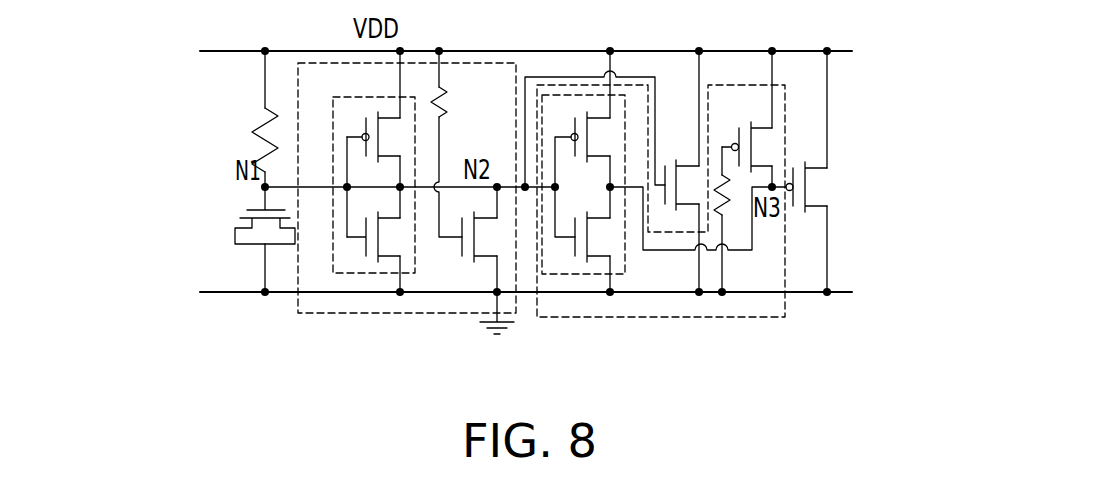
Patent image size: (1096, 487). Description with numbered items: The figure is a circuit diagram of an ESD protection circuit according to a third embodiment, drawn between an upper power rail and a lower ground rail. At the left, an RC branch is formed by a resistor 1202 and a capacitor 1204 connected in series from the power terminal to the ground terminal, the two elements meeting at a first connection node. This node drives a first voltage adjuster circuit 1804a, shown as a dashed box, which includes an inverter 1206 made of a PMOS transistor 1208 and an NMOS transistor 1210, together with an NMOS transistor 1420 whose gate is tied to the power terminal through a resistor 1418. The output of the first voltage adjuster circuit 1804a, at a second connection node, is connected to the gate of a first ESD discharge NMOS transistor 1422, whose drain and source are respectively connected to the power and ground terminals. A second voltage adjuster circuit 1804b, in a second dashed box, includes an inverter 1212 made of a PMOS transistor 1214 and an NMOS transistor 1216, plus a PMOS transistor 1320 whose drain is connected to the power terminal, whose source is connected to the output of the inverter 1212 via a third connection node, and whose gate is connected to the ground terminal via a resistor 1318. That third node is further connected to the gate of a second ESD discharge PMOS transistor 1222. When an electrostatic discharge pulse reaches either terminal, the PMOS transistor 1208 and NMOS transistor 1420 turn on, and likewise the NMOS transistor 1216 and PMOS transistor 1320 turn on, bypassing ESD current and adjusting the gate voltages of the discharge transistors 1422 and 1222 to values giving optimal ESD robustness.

The resistor 1202 is at (262, 136).
The capacitor 1204 is at (250, 207).
The inverter 1206 is at (332, 128).
The PMOS transistor 1208 is at (378, 118).
The NMOS transistor 1210 is at (368, 248).
The inverter 1212 is at (628, 272).
The PMOS transistor 1214 is at (577, 117).
The NMOS transistor 1216 is at (588, 253).
The second ESD discharge PMOS transistor 1222 is at (801, 204).
The resistor 1318 is at (731, 193).
The PMOS transistor 1320 is at (750, 133).
The resistor 1418 is at (444, 97).
The NMOS transistor 1420 is at (465, 250).
The first ESD discharge NMOS transistor 1422 is at (676, 177).
The first voltage adjuster circuit 1804a is at (297, 302).
The second voltage adjuster circuit 1804b is at (785, 317).